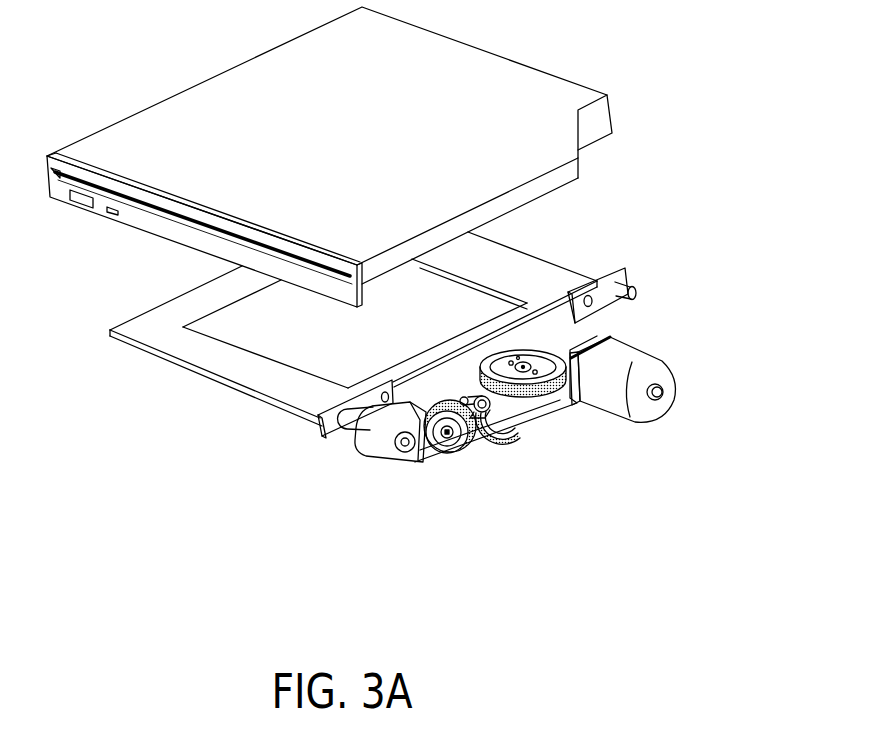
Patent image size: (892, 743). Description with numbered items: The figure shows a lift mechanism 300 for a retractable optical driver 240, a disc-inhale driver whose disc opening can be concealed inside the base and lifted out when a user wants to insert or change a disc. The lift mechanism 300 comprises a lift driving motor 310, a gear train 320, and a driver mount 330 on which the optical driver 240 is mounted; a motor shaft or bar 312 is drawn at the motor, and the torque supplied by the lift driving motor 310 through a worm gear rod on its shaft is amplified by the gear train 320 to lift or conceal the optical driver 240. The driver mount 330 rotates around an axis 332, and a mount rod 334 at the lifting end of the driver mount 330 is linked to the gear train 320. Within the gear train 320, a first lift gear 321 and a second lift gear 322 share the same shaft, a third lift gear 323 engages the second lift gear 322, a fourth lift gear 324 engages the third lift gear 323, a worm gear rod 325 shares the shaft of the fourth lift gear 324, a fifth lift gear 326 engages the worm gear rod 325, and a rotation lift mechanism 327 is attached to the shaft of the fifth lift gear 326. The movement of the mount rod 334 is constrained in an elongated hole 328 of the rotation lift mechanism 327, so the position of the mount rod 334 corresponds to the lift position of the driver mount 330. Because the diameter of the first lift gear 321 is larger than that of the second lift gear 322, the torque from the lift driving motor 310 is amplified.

The lift mechanism 300 is at (717, 116).
The retractable optical driver 240 is at (476, 87).
The driver mount 330 is at (566, 265).
The axis 332 is at (630, 289).
The mount rod 334 is at (318, 418).
The lift driving motor 310 is at (668, 377).
The motor shaft 312 is at (566, 340).
The gear train 320 is at (310, 523).
The first lift gear 321 is at (578, 406).
The second lift gear 322 is at (536, 401).
The third lift gear 323 is at (513, 429).
The fourth lift gear 324 is at (478, 452).
The worm gear rod 325 is at (489, 443).
The fifth lift gear 326 is at (415, 453).
The rotation lift mechanism 327 is at (363, 431).
The elongated hole 328 is at (383, 453).